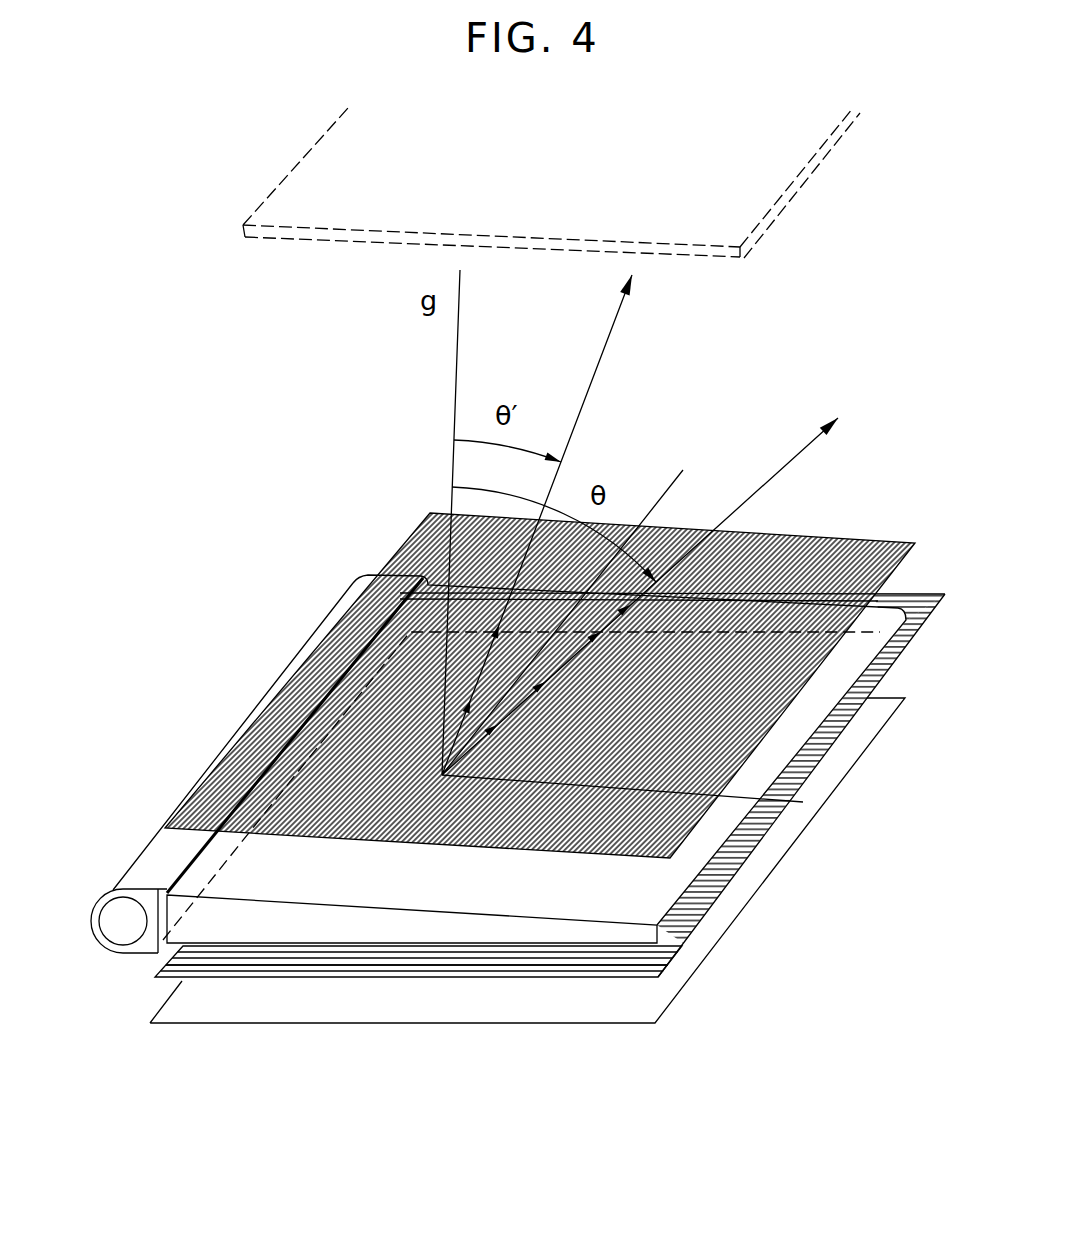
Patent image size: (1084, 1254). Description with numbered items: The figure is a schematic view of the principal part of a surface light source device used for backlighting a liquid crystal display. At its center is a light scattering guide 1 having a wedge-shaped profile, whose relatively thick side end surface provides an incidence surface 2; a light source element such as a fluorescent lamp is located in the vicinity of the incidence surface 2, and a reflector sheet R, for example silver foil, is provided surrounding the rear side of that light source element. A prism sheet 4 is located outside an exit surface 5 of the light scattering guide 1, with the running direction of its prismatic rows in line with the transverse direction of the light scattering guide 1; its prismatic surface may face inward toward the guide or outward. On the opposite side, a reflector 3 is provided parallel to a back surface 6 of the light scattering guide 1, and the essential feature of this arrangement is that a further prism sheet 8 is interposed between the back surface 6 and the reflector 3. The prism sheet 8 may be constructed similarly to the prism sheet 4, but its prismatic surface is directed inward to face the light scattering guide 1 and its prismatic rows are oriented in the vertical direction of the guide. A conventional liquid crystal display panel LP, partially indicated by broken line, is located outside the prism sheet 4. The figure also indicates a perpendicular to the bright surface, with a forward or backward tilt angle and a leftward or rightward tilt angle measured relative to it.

The light scattering guide 1 is at (268, 930).
The incidence surface 2 is at (152, 942).
The reflector 3 is at (668, 1012).
The prism sheet 4 is at (97, 950).
The exit surface 5 is at (500, 891).
The back surface 6 is at (447, 955).
The prism sheet 8 is at (663, 963).
The reflector sheet R is at (93, 898).
The liquid crystal display panel LP is at (802, 194).